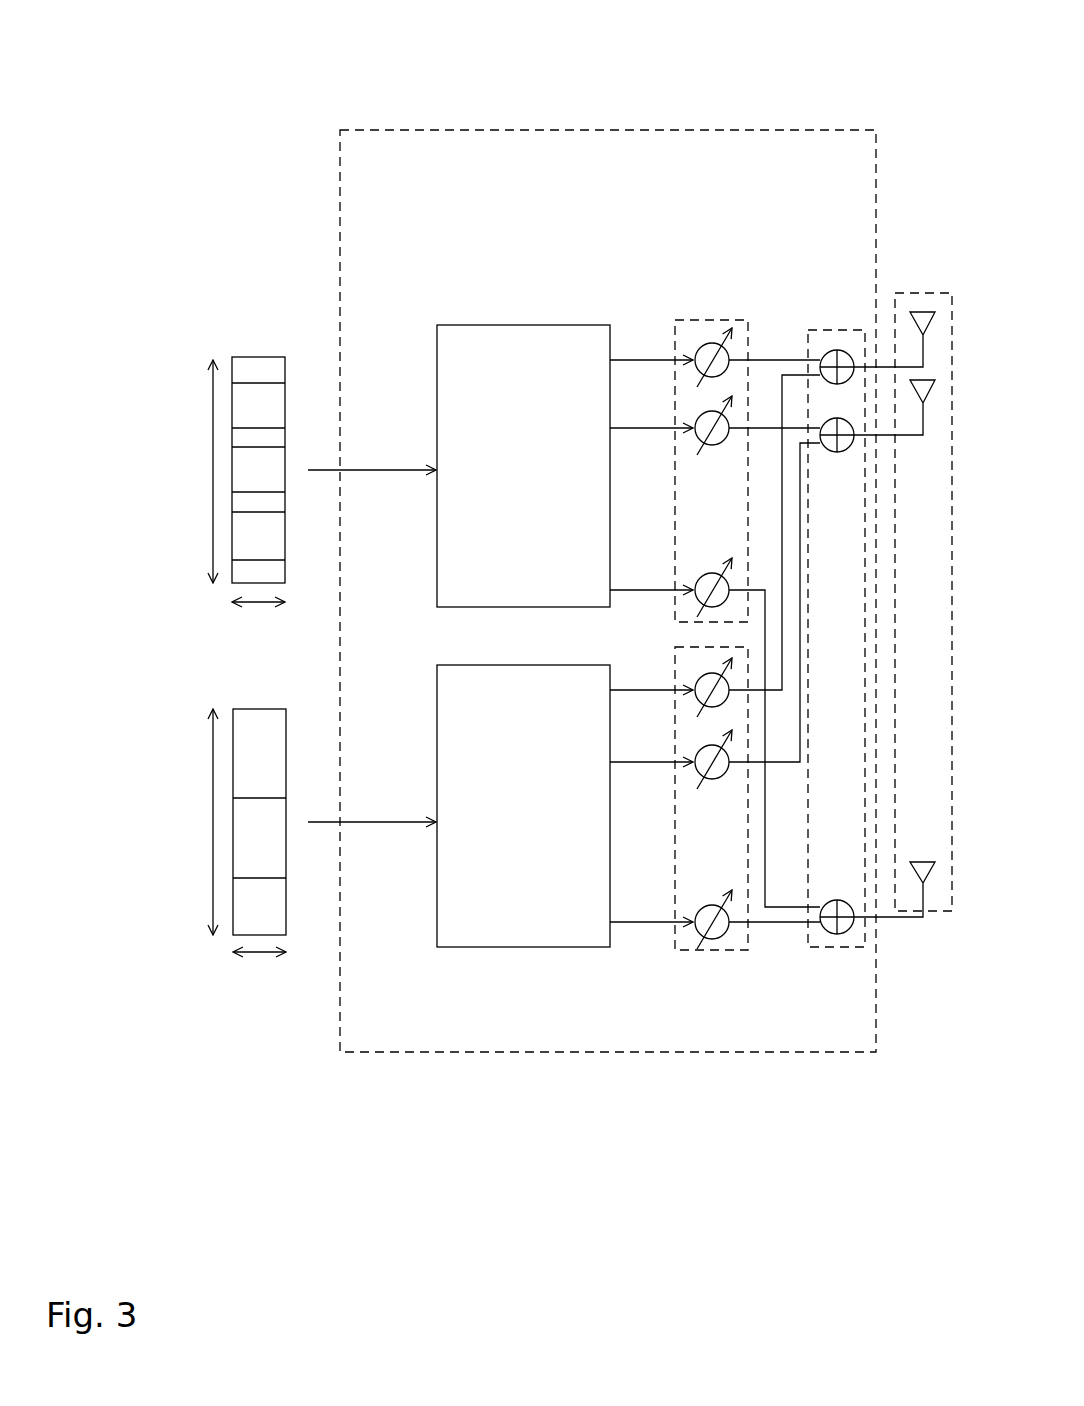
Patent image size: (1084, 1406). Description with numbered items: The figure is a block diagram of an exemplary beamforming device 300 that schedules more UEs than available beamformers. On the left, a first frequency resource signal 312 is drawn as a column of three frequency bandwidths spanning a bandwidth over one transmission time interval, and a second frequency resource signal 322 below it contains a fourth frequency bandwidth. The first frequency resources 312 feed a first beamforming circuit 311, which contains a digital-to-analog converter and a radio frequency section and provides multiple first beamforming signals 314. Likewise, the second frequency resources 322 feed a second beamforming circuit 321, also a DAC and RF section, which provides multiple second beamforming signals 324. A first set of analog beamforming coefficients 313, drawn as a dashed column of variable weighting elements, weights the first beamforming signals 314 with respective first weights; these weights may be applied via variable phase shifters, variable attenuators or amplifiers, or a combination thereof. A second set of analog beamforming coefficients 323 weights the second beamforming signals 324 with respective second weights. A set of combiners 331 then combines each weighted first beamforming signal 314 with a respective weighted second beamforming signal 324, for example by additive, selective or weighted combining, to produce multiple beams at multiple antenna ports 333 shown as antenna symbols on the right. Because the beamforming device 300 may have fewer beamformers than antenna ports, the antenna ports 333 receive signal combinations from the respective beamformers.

The beamforming device 300 is at (522, 126).
The first beamforming circuit 311 is at (463, 350).
The first frequency resources 312 is at (252, 350).
The first set of analog beamforming coefficients 313 is at (707, 317).
The first beamforming signals 314 is at (611, 334).
The second beamforming circuit 321 is at (463, 702).
The second frequency resources 322 is at (238, 697).
The second set of analog beamforming coefficients 323 is at (726, 955).
The second beamforming signals 324 is at (624, 683).
The set of combiners 331 is at (845, 327).
The antenna ports 333 is at (927, 291).